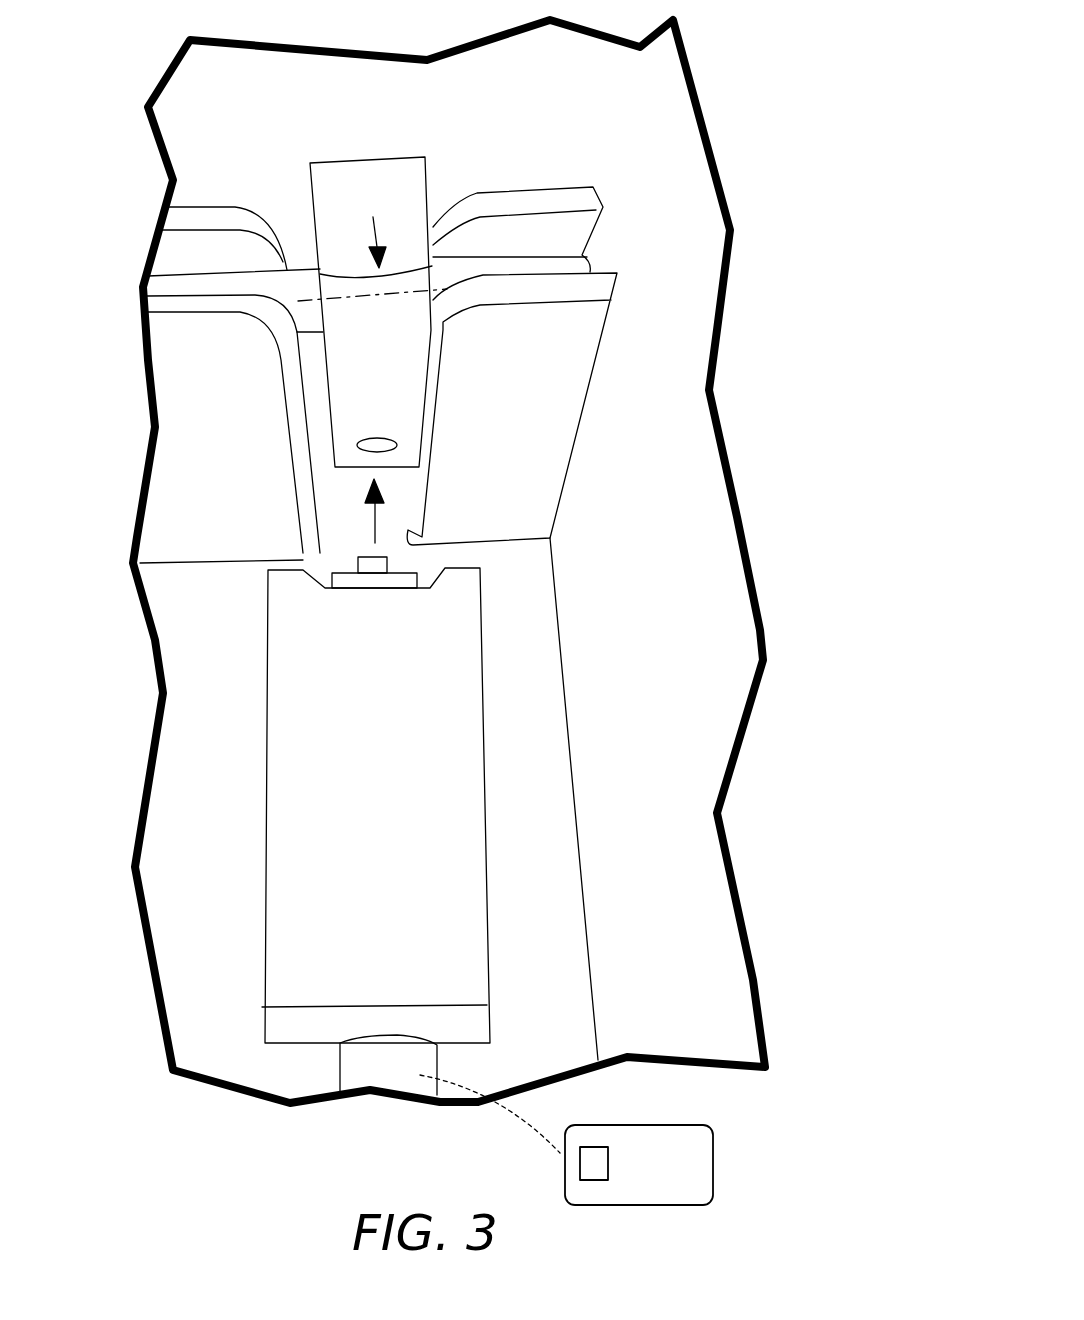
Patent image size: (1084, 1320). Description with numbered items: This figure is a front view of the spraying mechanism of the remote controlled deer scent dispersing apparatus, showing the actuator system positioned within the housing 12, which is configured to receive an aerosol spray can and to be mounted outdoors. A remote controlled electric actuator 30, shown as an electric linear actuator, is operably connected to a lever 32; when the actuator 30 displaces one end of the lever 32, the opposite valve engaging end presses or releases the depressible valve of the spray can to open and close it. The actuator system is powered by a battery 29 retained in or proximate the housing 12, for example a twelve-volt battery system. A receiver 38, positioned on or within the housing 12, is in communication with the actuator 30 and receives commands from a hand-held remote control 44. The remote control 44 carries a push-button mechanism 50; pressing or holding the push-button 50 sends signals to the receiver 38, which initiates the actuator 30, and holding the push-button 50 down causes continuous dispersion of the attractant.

The housing 12 is at (658, 473).
The battery 29 is at (280, 750).
The remote controlled electric actuator 30 is at (350, 578).
The lever 32 is at (393, 345).
The receiver 38 is at (363, 1062).
The hand-held remote control 44 is at (713, 1187).
The push-button mechanism 50 is at (608, 1155).